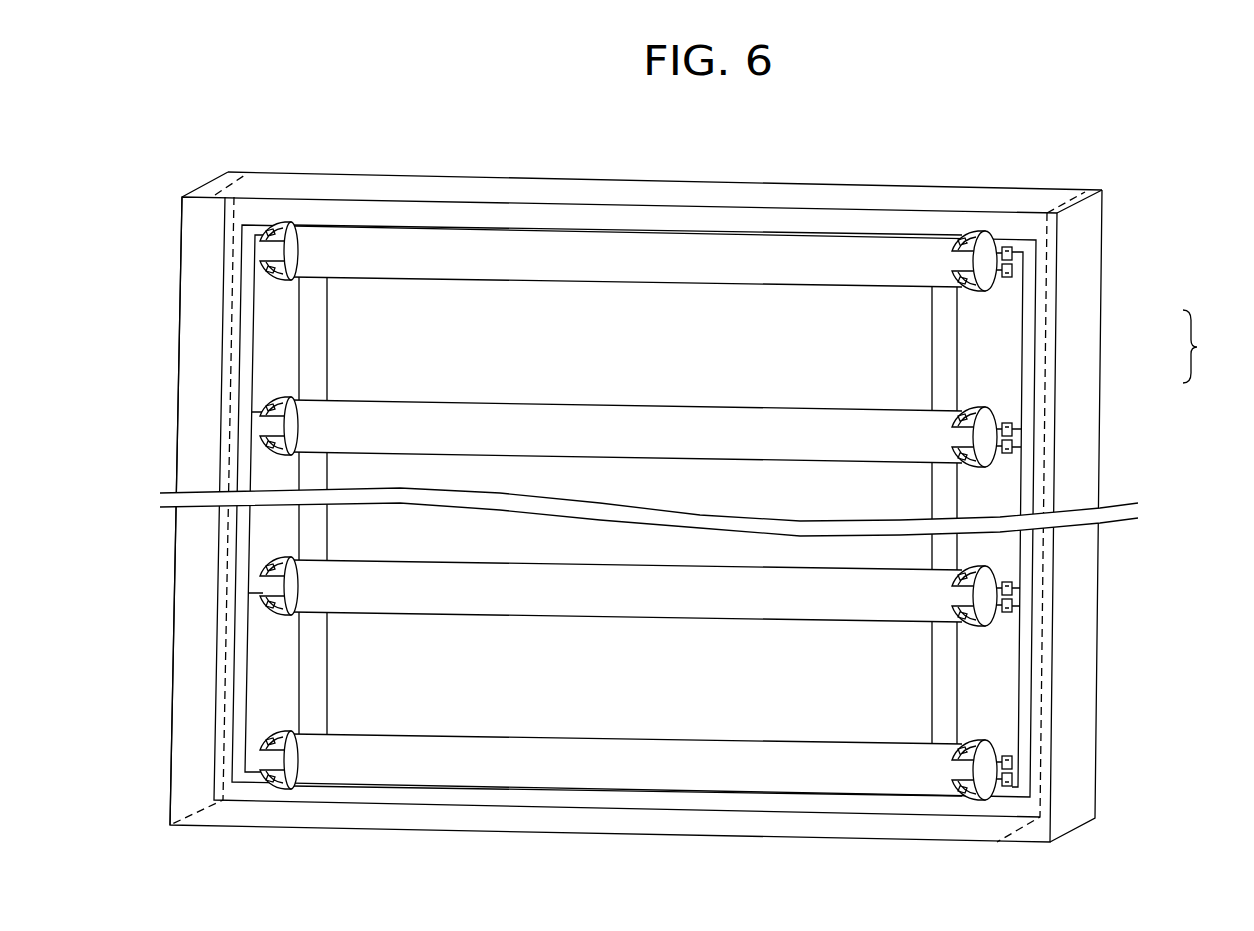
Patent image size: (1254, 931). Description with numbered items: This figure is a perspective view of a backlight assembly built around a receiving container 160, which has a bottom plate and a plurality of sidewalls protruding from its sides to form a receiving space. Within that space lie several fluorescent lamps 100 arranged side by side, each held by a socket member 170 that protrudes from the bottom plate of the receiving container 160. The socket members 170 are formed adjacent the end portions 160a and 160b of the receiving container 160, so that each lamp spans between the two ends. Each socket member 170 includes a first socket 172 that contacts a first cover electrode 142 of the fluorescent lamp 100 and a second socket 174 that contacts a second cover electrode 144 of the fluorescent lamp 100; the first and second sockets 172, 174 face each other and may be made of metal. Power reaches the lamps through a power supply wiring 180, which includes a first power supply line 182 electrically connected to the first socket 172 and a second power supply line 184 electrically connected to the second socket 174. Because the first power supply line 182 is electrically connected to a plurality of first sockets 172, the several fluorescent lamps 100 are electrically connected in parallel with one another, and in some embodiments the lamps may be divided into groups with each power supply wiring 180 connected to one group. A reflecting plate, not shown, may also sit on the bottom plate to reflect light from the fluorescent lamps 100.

The fluorescent lamp 100 is at (728, 393).
The first cover electrode 142 is at (989, 418).
The second cover electrode 144 is at (988, 452).
The receiving container 160 is at (634, 477).
The end portion of receiving container 160a is at (1085, 662).
The end portion of receiving container 160b is at (180, 632).
The socket member 170 is at (983, 195).
The first socket 172 is at (978, 233).
The second socket 174 is at (953, 293).
The power supply wiring 180 is at (734, 511).
The first power supply line 182 is at (1028, 370).
The support frame 184 is at (946, 316).